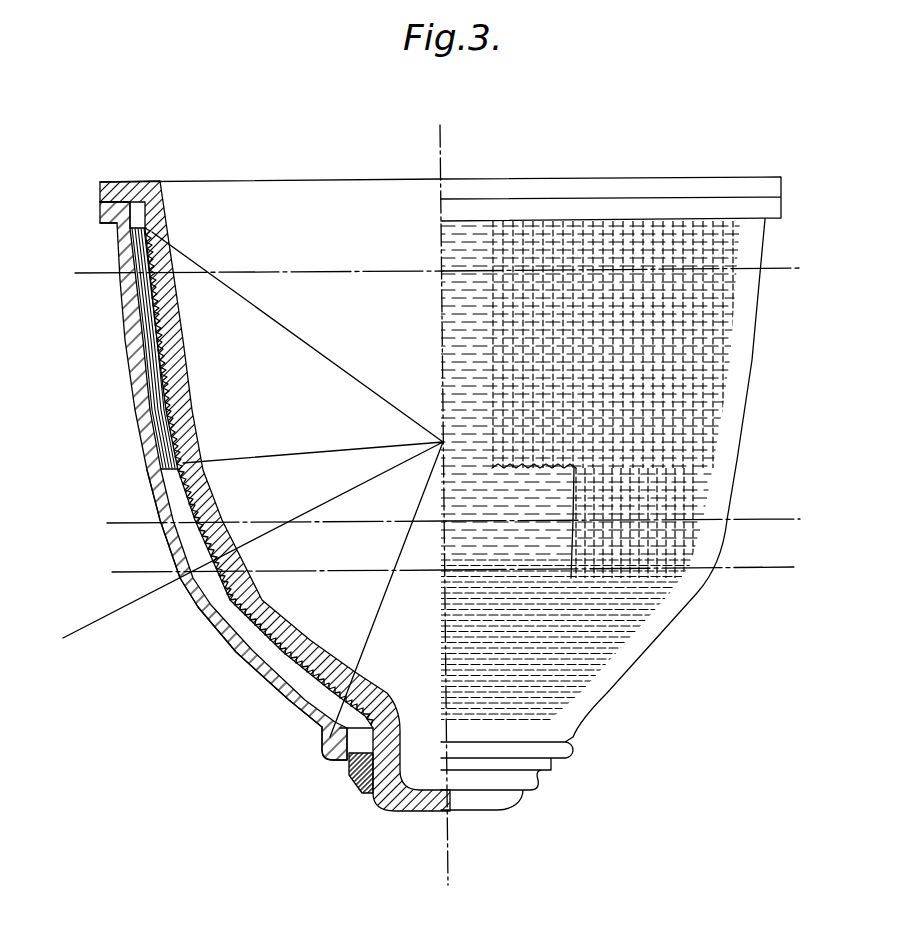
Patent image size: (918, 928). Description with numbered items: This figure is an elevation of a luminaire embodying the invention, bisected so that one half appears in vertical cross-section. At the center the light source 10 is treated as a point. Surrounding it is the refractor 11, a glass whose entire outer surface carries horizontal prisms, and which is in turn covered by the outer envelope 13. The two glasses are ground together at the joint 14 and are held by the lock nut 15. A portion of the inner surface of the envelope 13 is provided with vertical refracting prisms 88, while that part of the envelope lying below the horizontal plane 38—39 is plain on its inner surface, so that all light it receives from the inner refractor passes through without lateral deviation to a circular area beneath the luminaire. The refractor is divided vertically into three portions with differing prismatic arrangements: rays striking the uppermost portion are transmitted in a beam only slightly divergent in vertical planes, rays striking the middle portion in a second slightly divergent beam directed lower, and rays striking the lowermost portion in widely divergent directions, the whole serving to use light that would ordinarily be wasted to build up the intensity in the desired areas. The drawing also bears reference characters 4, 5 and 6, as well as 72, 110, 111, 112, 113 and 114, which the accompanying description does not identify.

The section line 4- 4 is at (433, 269).
The section line 5- 5 is at (266, 524).
The section line 6- 6 is at (632, 519).
The light source 10 is at (441, 439).
The refractor 11 is at (125, 182).
The outer envelope 13 is at (137, 310).
The joint 14 is at (112, 193).
The lock nut 15 is at (360, 775).
The horizontal plane 38 is at (264, 572).
The horizontal plane 39 is at (632, 564).
The wire mesh screen 72 is at (150, 252).
The vertical refracting prisms 88 is at (715, 400).
The center axis line 110 is at (456, 522).
The outer shell lower end 111 is at (328, 760).
The outer shell 112 is at (196, 598).
The mesh lower end 113 is at (183, 463).
The mesh upper end 114 is at (150, 231).